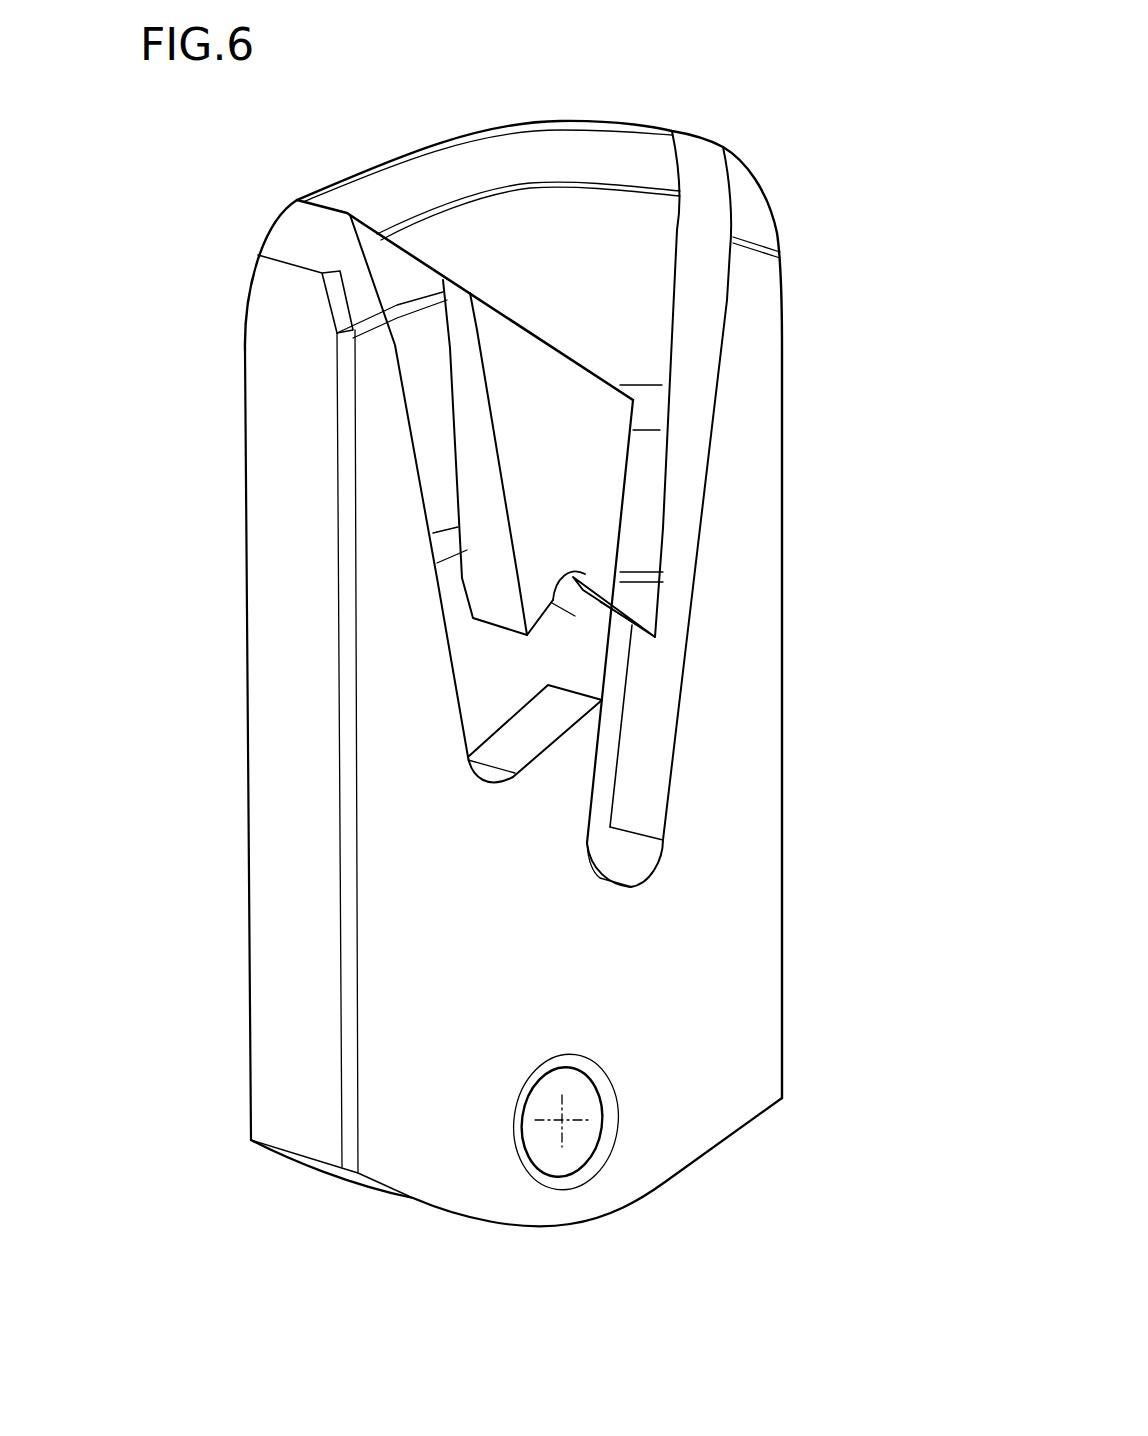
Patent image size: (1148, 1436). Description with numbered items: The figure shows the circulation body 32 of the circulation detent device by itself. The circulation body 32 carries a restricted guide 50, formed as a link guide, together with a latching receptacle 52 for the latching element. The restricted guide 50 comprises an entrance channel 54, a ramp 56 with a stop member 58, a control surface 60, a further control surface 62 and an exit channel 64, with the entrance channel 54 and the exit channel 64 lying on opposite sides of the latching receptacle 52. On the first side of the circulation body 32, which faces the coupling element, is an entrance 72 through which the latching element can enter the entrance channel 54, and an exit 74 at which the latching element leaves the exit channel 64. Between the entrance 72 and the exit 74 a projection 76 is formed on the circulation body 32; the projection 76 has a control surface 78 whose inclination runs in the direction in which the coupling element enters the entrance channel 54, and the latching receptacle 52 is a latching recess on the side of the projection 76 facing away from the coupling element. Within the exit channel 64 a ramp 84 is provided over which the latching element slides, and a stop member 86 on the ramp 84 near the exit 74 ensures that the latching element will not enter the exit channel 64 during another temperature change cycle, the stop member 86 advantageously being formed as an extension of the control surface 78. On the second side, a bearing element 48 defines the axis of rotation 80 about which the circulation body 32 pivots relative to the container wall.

The circulation body 32 is at (755, 108).
The bearing element 48 is at (555, 1162).
The restricted guide 50 is at (688, 660).
The latching receptacle 52 is at (573, 615).
The entrance channel 54 is at (665, 545).
The ramp 56 is at (653, 562).
The stop member 58 is at (627, 597).
The control surface 60 is at (600, 615).
The further control surface 62 is at (542, 732).
The exit channel 64 is at (445, 665).
The entrance 72 is at (655, 262).
The exit 74 is at (393, 242).
The projection 76 is at (558, 395).
The control surface 78 is at (518, 322).
The axis of rotation 80 is at (565, 1117).
The ramp 84 is at (428, 377).
The stop member 86 is at (365, 227).